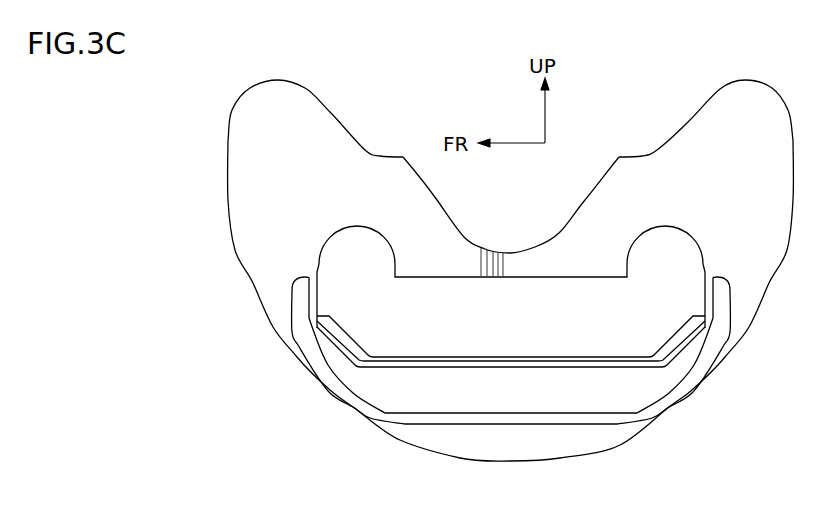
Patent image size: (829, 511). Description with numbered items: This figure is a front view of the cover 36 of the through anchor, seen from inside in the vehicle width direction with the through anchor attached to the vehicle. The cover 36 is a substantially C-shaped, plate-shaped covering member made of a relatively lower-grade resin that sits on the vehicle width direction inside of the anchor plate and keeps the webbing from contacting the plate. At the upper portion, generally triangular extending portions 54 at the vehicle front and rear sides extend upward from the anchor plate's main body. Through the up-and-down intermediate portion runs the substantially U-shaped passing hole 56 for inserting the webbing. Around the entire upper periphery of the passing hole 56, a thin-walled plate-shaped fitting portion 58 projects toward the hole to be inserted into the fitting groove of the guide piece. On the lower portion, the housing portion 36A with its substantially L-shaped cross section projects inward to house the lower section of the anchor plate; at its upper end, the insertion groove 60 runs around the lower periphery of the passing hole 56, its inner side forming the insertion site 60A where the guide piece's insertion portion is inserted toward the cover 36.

The cover 36 is at (351, 104).
The housing portion 36A is at (378, 391).
The extending portions 54 is at (346, 133).
The passing hole 56 is at (417, 280).
The fitting portion 58 is at (575, 279).
The insertion groove 60 is at (508, 367).
The insertion site 60A is at (593, 367).